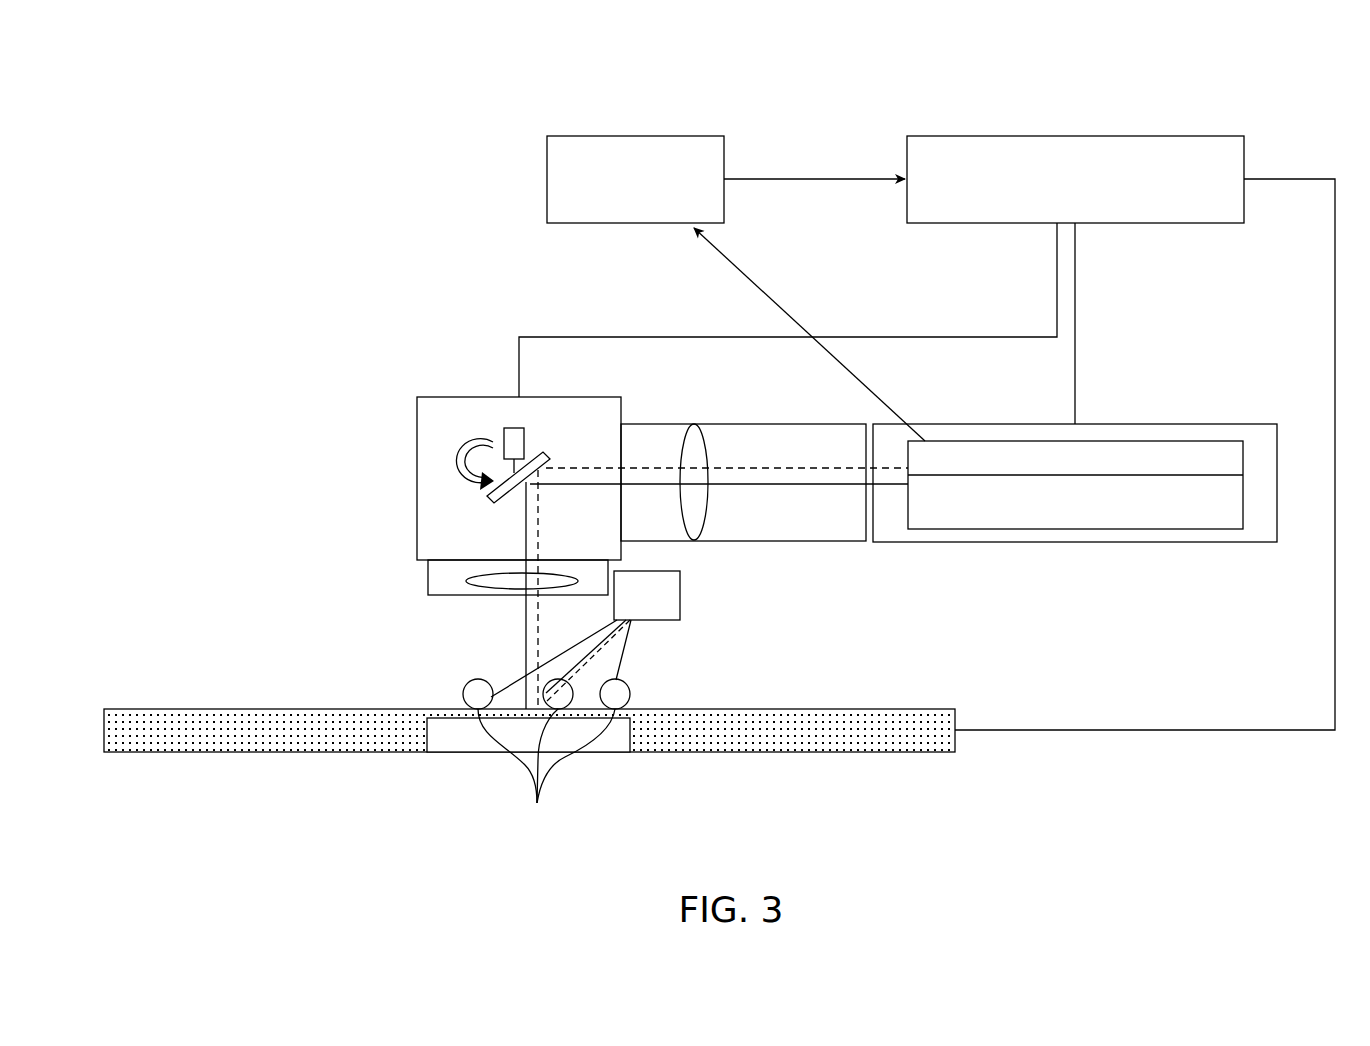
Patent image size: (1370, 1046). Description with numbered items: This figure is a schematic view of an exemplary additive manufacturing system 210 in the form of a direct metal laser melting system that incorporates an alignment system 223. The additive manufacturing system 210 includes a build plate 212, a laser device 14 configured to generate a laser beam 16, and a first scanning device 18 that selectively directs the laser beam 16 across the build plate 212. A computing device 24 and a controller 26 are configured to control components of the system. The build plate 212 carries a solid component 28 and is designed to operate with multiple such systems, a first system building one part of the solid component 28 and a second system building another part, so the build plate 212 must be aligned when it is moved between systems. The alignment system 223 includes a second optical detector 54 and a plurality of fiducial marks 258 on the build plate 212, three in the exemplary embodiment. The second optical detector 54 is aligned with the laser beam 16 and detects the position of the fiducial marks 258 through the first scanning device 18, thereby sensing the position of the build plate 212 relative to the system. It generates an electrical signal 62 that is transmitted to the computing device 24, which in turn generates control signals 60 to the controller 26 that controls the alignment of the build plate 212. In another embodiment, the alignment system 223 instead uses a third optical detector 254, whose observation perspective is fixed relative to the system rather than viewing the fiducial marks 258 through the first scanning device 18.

The additive manufacturing system 210 is at (1162, 55).
The computing device 24 is at (636, 136).
The controller 26 is at (1076, 136).
The control signals 60 is at (816, 179).
The electrical signal 62 is at (868, 383).
The first scanning device 18 is at (457, 397).
The laser beam 16 is at (783, 485).
The laser device 14 is at (1155, 542).
The second optical detector 54 is at (1158, 441).
The third optical detector 254 is at (680, 603).
The build plate 212 is at (830, 709).
The solid component 28 is at (437, 718).
The fiducial marks 258 is at (546, 776).
The alignment system 223 is at (922, 582).